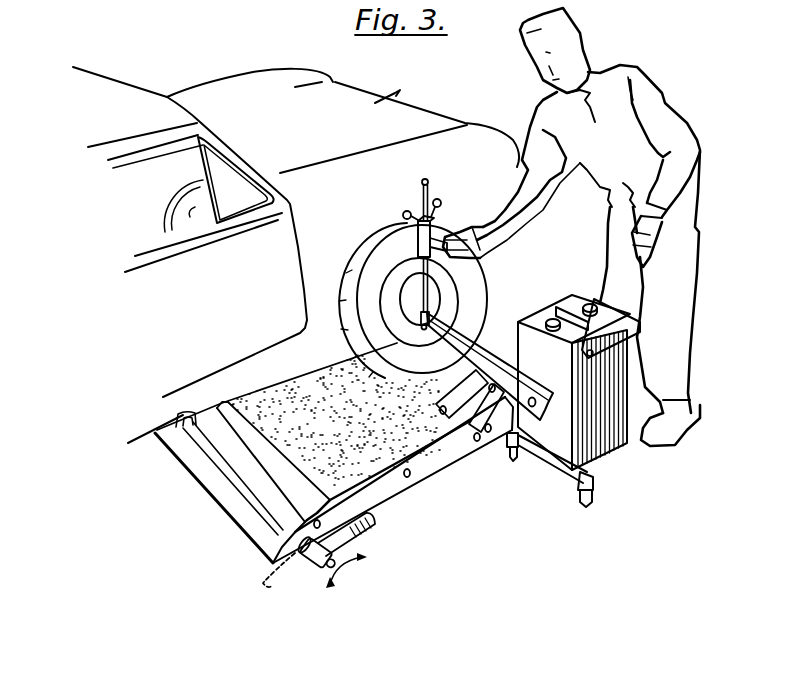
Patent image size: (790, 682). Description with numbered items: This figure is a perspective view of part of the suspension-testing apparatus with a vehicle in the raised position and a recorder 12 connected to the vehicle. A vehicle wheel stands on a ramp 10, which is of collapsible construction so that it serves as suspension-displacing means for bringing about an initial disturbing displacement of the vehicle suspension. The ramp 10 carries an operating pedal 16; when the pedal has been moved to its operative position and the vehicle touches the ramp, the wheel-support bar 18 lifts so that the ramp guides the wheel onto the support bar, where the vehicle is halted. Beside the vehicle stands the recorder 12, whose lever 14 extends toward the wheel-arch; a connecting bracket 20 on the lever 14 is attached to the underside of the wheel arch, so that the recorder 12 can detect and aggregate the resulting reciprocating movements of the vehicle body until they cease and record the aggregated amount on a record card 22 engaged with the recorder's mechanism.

The ramp 10 is at (282, 437).
The recorder 12 is at (603, 440).
The lever 14 is at (486, 362).
The operating pedal 16 is at (374, 519).
The wheel-support bar 18 is at (458, 365).
The connecting bracket 20 is at (411, 207).
The record card 22 is at (567, 307).